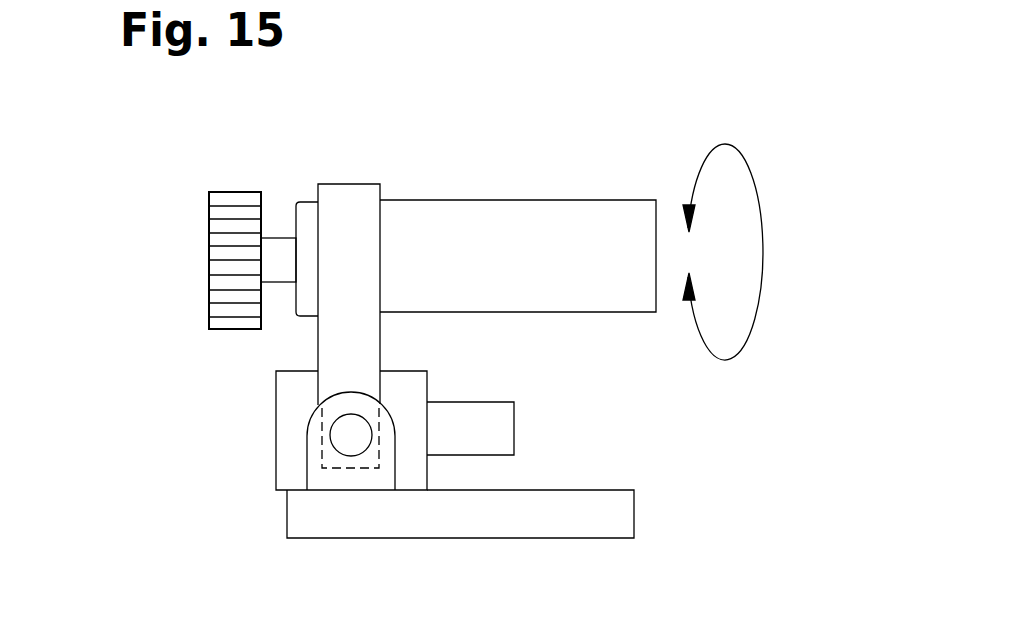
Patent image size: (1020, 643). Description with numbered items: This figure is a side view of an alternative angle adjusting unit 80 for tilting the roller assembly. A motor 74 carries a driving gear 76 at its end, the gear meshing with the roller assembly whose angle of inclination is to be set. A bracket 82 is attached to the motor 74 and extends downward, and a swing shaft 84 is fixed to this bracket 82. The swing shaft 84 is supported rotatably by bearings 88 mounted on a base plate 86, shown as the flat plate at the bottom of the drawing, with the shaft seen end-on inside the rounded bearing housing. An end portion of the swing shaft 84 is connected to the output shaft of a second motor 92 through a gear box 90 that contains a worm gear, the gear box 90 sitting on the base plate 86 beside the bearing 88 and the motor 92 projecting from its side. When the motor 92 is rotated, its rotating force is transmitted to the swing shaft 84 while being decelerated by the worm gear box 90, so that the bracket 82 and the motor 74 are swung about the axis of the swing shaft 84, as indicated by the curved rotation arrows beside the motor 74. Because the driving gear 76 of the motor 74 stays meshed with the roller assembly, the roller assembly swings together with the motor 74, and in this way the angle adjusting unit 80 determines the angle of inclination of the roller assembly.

The motor 74 is at (500, 210).
The driving gear 76 is at (236, 190).
The angle adjusting unit 80 is at (245, 365).
The bracket 82 is at (343, 195).
The swing shaft 84 is at (352, 442).
The base plate 86 is at (520, 520).
The bearing 88 is at (322, 476).
The gear box 90 is at (405, 390).
The motor 92 is at (497, 430).